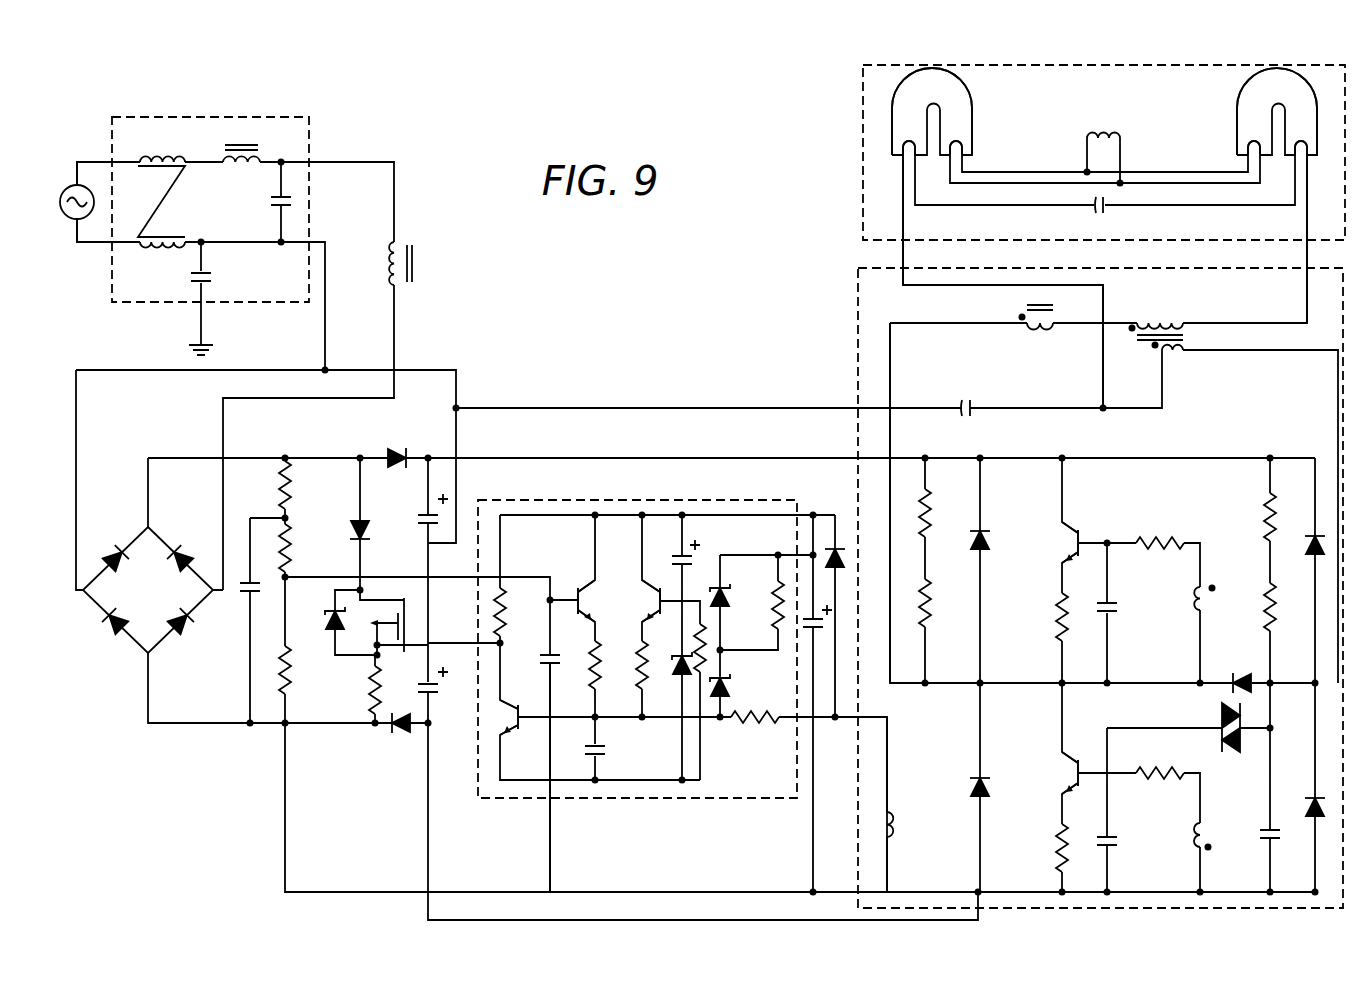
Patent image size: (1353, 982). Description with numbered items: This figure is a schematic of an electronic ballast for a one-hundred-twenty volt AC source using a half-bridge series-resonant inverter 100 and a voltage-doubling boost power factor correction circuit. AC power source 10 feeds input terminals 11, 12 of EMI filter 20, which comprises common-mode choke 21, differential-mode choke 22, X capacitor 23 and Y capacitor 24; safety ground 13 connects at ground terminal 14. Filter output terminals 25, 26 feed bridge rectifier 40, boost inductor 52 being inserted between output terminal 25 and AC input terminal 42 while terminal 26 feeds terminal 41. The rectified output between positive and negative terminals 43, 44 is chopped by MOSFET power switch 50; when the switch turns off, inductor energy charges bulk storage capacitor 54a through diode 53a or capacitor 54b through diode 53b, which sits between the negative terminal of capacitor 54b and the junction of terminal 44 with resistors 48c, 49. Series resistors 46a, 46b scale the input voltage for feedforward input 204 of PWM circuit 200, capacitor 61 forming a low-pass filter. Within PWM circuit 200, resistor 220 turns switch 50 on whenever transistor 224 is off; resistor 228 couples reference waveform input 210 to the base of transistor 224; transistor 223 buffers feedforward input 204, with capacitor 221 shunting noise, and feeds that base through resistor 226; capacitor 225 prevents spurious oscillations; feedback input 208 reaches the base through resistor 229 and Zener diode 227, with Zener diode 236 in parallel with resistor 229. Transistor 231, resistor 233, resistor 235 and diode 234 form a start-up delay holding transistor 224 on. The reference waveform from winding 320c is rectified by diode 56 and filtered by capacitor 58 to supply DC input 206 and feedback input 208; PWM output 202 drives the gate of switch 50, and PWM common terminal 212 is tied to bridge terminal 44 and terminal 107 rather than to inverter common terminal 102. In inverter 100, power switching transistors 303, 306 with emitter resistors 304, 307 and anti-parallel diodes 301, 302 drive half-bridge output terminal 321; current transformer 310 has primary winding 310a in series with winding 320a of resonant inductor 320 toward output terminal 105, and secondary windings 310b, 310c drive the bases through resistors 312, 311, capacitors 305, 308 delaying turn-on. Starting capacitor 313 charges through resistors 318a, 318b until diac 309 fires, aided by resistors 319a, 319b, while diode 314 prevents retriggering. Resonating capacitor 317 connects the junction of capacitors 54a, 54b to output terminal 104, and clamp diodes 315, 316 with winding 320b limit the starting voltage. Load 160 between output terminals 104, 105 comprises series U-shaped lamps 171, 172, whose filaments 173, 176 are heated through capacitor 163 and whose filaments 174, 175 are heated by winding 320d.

The AC power source 10 is at (96, 200).
The input terminal 11 is at (88, 162).
The input terminal 12 is at (88, 245).
The safety ground 13 is at (200, 340).
The ground terminal 14 is at (203, 305).
The EMI filter 20 is at (310, 132).
The common-mode choke 21 is at (182, 158).
The differential-mode choke 22 is at (238, 145).
The X capacitor 23 is at (275, 197).
The Y capacitor 24 is at (205, 275).
The output terminal 25 is at (312, 164).
The output terminal 26 is at (312, 242).
The full-wave rectifier bridge assembly 40 is at (95, 655).
The input terminal 41 is at (83, 592).
The input terminal 42 is at (220, 553).
The positive terminal 43 is at (168, 458).
The negative terminal 44 is at (146, 680).
The resistor 46a is at (290, 480).
The resistor 46b is at (290, 548).
The resistor 48c is at (290, 678).
The resistor 49 is at (368, 703).
The MOSFET power switch 50 is at (330, 632).
The boost inductor 52 is at (392, 278).
The diode 53a is at (397, 450).
The diode 53b is at (398, 732).
The bulk storage capacitor 54a is at (425, 512).
The bulk storage capacitor 54b is at (432, 690).
The diode 56 is at (840, 548).
The capacitor 58 is at (808, 628).
The capacitor 61 is at (245, 598).
The inverter 100 is at (858, 315).
The common terminal 102 is at (980, 915).
The inverter output terminal 104 is at (903, 255).
The inverter output terminal 105 is at (1307, 248).
The terminal 107 is at (855, 892).
The load 160 is at (863, 178).
The capacitor 163 is at (1094, 205).
The U-shaped lamp 171 is at (972, 100).
The U-shaped lamp 172 is at (1237, 105).
The filament 173 is at (895, 150).
The filament 174 is at (962, 150).
The filament 175 is at (1250, 150).
The filament 176 is at (1308, 150).
The PWM circuit 200 is at (480, 800).
The PWM output 202 is at (478, 640).
The feedforward input 204 is at (478, 577).
The DC input 206 is at (775, 500).
The feedback input 208 is at (797, 552).
The reference waveform input 210 is at (808, 720).
The common terminal 212 is at (552, 830).
The resistor 220 is at (505, 615).
The capacitor 221 is at (545, 657).
The transistor 223 is at (594, 572).
The transistor 224 is at (512, 728).
The capacitor 225 is at (605, 748).
The resistor 226 is at (590, 665).
The Zener diode 227 is at (728, 694).
The resistor 228 is at (752, 728).
The resistor 229 is at (775, 588).
The transistor 231 is at (642, 575).
The resistor 233 is at (638, 668).
The diode 234 is at (680, 660).
The resistor 235 is at (706, 640).
The Zener diode 236 is at (713, 595).
The diode 301 is at (990, 542).
The diode 302 is at (970, 790).
The power switching transistor 303 is at (1080, 533).
The resistor 304 is at (1057, 622).
The capacitor 305 is at (1113, 608).
The second power switching transistor 306 is at (1075, 770).
The resistor 307 is at (1057, 850).
The capacitor 308 is at (1113, 838).
The diac 309 is at (1220, 715).
The current transformer 310 is at (1010, 310).
The primary winding 310a is at (1043, 328).
The secondary winding 310b is at (1197, 600).
The secondary winding 310c is at (1208, 828).
The resistor 311 is at (1158, 768).
The resistor 312 is at (1160, 535).
The capacitor 313 is at (1266, 835).
The diode 314 is at (1240, 678).
The diode 315 is at (1310, 802).
The diode 316 is at (1310, 538).
The resonating capacitor 317 is at (973, 402).
The resistor 318a is at (1265, 515).
The resistor 318b is at (1265, 600).
The resistor 319a is at (929, 505).
The resistor 319b is at (929, 598).
The series-resonant inductor 320 is at (1240, 340).
The winding 320a is at (1142, 322).
The winding 320b is at (1165, 380).
The winding 320c is at (898, 830).
The winding 320d is at (1110, 135).
The half-bridge output terminal 321 is at (892, 433).